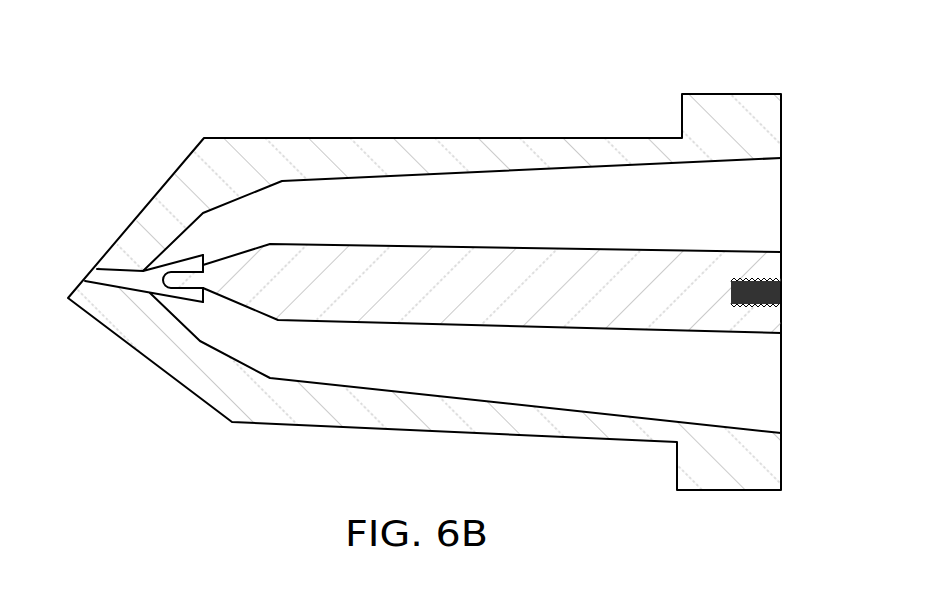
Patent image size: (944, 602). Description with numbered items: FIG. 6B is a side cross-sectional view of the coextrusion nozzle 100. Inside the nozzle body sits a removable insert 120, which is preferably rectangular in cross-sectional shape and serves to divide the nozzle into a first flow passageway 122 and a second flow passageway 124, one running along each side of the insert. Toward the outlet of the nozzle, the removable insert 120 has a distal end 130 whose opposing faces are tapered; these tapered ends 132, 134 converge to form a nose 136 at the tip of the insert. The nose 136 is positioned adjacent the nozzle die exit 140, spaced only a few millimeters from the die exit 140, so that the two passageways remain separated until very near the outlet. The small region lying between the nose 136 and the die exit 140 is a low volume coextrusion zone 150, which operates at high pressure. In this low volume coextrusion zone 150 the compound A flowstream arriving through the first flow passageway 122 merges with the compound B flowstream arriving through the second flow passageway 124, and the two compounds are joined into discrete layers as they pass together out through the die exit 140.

The coextrusion nozzle 100 is at (443, 258).
The removable insert 120 is at (472, 280).
The first flow passageway 122 is at (771, 208).
The second flow passageway 124 is at (771, 384).
The distal end 130 is at (421, 292).
The tapered end 132 is at (262, 244).
The tapered end 134 is at (259, 313).
The nose 136 is at (204, 262).
The nozzle die exit 140 is at (97, 270).
The low volume coextrusion zone 150 is at (148, 292).